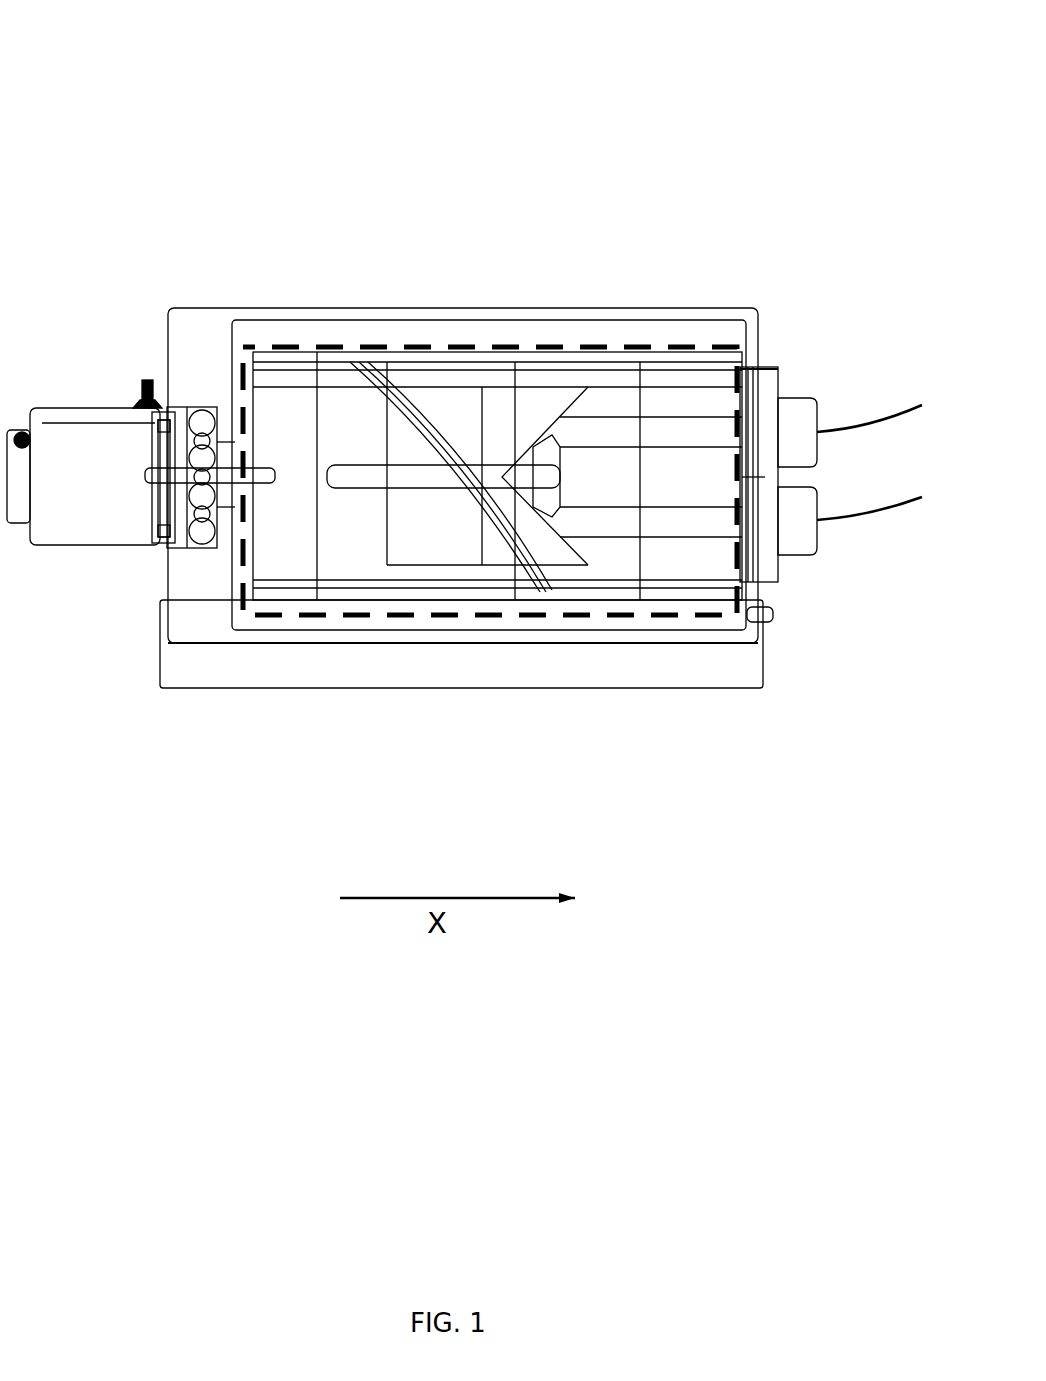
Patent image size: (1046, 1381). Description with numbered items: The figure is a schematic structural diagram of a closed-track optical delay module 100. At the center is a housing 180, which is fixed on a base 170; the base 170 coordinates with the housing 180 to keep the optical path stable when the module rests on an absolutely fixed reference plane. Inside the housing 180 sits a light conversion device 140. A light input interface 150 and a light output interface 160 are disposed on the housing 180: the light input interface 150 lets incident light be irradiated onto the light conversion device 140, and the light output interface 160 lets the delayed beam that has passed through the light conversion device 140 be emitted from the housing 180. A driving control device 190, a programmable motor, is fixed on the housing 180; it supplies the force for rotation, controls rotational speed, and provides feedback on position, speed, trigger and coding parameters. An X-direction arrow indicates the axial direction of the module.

The closed-track optical delay module 100 is at (152, 33).
The light conversion device 140 is at (525, 523).
The light input interface 150 is at (795, 540).
The light output interface 160 is at (797, 403).
The base 170 is at (218, 663).
The housing 180 is at (747, 313).
The driving control device 190 is at (38, 455).